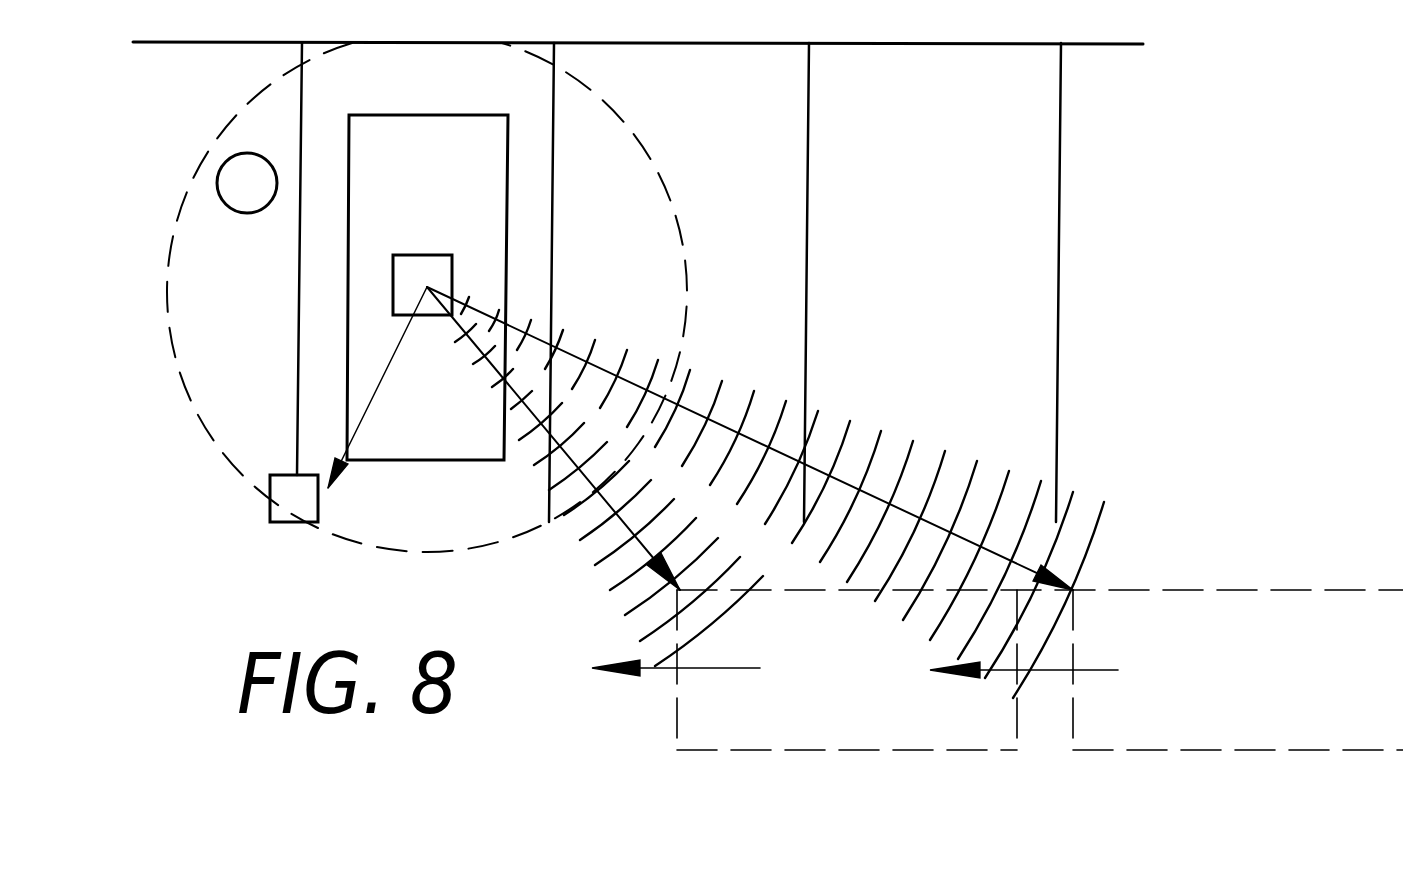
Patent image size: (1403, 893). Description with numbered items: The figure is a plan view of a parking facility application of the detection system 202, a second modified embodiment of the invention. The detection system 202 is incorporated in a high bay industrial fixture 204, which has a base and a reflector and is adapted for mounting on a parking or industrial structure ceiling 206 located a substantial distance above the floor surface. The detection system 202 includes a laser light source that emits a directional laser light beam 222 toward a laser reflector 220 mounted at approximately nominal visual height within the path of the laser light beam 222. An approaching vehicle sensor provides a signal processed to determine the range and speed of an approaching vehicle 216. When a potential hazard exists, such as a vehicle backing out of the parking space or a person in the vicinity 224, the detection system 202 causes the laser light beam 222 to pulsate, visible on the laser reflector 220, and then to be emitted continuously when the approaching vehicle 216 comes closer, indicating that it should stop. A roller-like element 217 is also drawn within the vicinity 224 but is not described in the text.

The detection system 202 is at (386, 250).
The high bay industrial fixture 204 is at (400, 315).
The ceiling 206 is at (1097, 46).
The approaching vehicle 216 is at (676, 752).
The roller 217 is at (267, 198).
The laser reflector 220 is at (322, 505).
The laser light beam 222 is at (357, 436).
The vicinity 224 is at (632, 122).